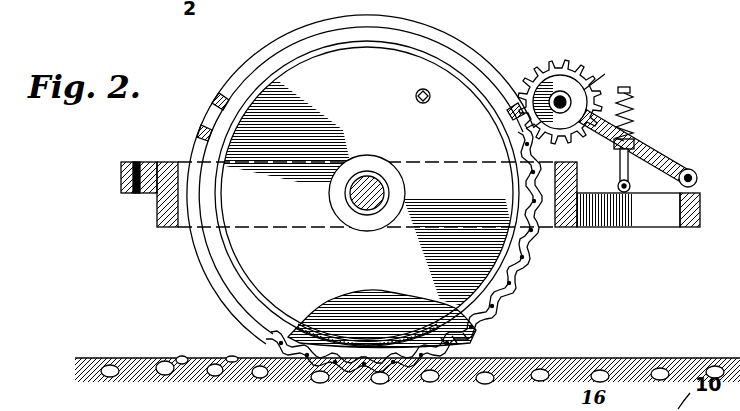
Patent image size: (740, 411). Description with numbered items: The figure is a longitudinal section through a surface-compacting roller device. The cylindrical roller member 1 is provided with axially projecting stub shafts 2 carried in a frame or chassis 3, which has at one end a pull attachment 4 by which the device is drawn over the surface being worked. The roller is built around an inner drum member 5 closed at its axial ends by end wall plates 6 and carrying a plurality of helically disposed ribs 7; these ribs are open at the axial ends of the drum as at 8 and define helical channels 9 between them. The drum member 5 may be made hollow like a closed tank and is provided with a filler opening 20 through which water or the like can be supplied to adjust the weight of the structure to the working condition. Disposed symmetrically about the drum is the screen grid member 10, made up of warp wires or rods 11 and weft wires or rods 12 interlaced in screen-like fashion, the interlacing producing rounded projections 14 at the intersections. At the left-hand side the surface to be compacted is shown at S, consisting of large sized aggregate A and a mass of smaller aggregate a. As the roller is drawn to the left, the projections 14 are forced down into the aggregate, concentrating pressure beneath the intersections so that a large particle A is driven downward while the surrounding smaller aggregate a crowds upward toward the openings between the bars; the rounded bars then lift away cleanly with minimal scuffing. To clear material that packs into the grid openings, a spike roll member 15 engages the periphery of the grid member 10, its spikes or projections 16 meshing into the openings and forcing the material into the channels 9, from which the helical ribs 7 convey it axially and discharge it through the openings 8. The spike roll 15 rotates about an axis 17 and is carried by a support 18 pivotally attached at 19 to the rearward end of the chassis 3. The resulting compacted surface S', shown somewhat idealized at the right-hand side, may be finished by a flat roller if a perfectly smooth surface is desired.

The cylindrical roller member 1 is at (204, 278).
The stub shafts 2 is at (375, 180).
The frame or chassis 3 is at (175, 160).
The pull attachment 4 is at (121, 178).
The inner drum member 5 is at (240, 252).
The end wall plates 6 is at (421, 63).
The helically disposed ribs 7 is at (395, 350).
The openings 8 is at (227, 111).
The helical channels 9 is at (428, 332).
The screen grid member 10 is at (536, 270).
The warp wires or rods 11 is at (525, 290).
The weft wires or rods 12 is at (510, 306).
The rounded projections 14 is at (541, 243).
The spike roll member 15 is at (571, 88).
The spikes or projections 16 is at (533, 68).
The axis 17 is at (584, 123).
The support 18 is at (661, 144).
The pivotal attachment 19 is at (694, 170).
The filler opening 20 is at (433, 103).
The surface to be compacted S is at (247, 351).
The compacted surface S' is at (580, 359).
The large sized aggregate A is at (180, 355).
The smaller aggregate a is at (232, 355).